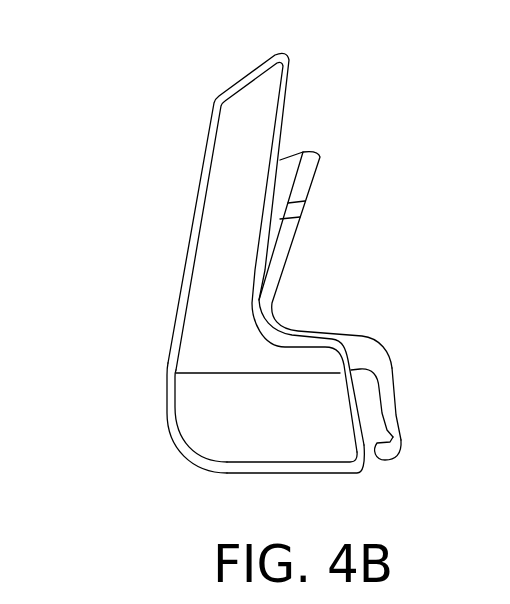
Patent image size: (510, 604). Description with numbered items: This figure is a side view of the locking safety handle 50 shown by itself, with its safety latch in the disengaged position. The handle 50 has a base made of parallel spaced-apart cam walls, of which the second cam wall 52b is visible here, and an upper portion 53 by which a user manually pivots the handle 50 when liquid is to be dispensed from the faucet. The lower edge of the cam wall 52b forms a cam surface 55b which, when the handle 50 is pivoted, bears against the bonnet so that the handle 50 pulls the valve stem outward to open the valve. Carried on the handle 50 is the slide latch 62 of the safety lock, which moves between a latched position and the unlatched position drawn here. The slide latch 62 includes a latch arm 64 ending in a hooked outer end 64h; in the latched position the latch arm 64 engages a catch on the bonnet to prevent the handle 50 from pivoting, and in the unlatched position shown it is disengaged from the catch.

The handle 50 is at (266, 290).
The upper portion 53 is at (228, 122).
The second cam wall 52b is at (290, 447).
The cam surface 55b is at (183, 453).
The slide latch 62 is at (363, 338).
The latch arm 64 is at (395, 428).
The hooked outer end 64h is at (390, 458).